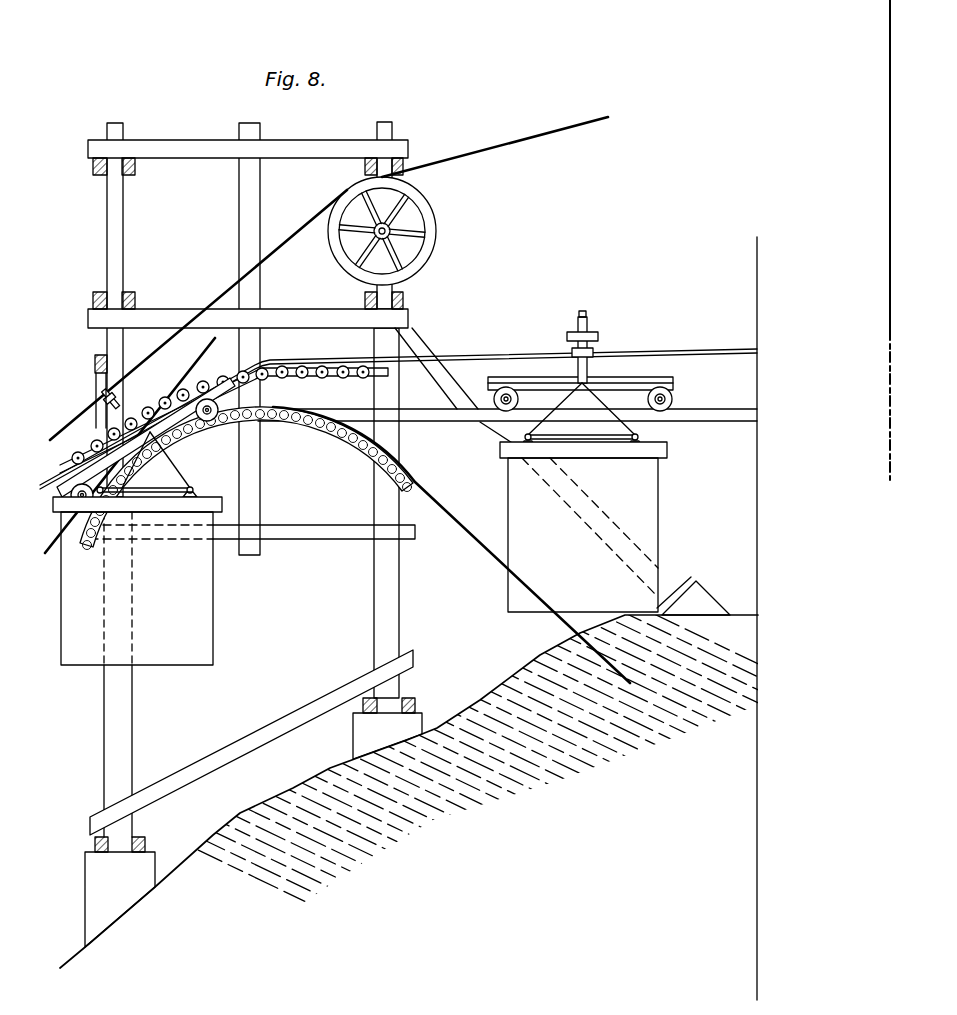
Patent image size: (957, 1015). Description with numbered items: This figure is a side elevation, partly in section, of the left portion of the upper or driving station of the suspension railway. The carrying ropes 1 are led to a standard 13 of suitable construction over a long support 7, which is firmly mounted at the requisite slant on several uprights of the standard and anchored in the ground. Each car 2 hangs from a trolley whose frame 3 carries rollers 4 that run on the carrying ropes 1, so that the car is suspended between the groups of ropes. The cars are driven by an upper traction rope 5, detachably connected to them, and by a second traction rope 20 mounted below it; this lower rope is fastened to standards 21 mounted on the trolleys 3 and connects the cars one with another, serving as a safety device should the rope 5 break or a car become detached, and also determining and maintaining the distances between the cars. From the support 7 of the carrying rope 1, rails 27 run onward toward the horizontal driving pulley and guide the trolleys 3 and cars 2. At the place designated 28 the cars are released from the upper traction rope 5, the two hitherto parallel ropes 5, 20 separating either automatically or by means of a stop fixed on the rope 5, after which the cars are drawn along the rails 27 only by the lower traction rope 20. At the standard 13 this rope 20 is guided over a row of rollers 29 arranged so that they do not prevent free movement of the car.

The carrying rope 1 is at (52, 546).
The car 2 is at (213, 600).
The trolley frame 3 is at (182, 410).
The roller 4 is at (72, 500).
The upper traction rope 5 is at (481, 158).
The support 7 is at (322, 427).
The standard 13 is at (123, 241).
The second traction rope 20 is at (57, 467).
The standard 21 is at (122, 410).
The rail 27 is at (468, 418).
The release place 28 is at (95, 370).
The roller 29 is at (342, 379).